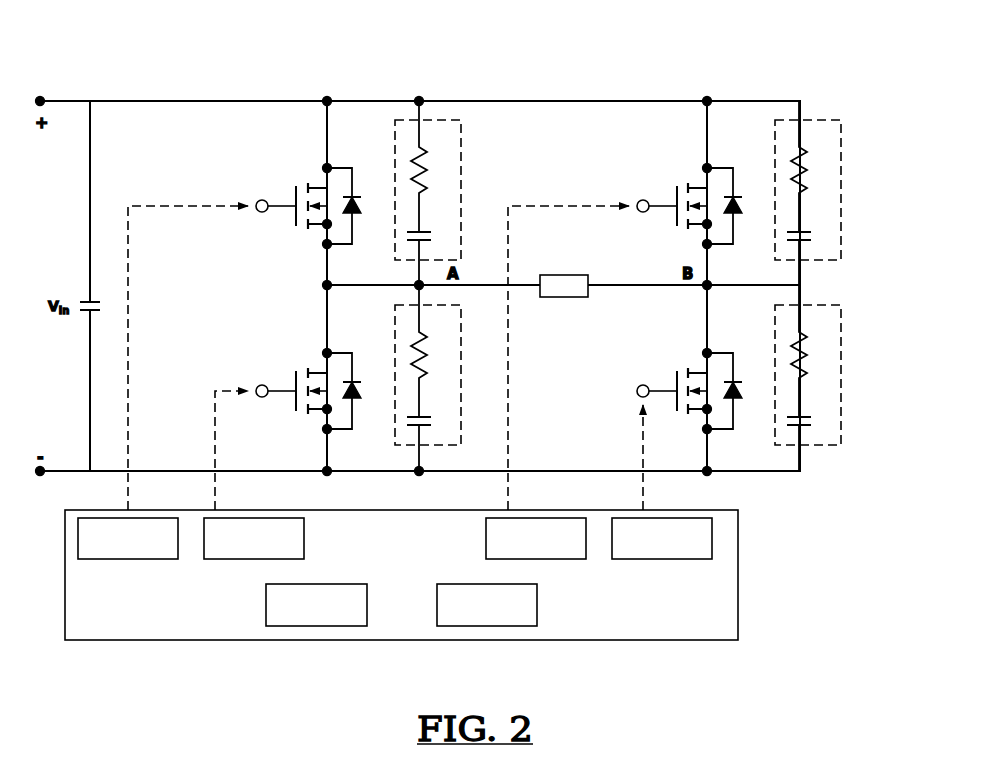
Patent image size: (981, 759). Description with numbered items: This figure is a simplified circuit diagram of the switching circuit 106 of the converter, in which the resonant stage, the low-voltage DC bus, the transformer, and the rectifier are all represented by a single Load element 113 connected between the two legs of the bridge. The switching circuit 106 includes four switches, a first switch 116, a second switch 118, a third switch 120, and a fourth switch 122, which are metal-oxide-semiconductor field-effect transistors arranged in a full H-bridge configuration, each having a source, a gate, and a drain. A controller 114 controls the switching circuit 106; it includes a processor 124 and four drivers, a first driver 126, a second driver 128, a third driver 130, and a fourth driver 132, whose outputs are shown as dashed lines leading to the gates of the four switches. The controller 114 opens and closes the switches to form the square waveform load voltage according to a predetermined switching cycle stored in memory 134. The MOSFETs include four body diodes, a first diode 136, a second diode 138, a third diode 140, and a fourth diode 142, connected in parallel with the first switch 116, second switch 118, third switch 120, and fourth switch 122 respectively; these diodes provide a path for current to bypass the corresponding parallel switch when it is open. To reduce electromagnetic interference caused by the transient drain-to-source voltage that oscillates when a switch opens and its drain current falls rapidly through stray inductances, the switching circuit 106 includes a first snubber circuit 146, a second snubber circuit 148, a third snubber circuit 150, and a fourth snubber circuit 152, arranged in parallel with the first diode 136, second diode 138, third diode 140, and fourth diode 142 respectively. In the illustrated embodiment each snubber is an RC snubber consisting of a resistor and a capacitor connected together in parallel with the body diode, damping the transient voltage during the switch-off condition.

The switching circuit 106 is at (818, 66).
The Load element 113 is at (559, 274).
The controller 114 is at (738, 575).
The first switch 116 is at (281, 184).
The second switch 118 is at (283, 370).
The third switch 120 is at (661, 184).
The fourth switch 122 is at (663, 370).
The processor 124 is at (300, 626).
The first driver 126 is at (128, 559).
The second driver 128 is at (217, 559).
The third driver 130 is at (571, 559).
The fourth driver 132 is at (666, 559).
The memory 134 is at (487, 626).
The first diode 136 is at (360, 190).
The second diode 138 is at (360, 375).
The third diode 140 is at (741, 190).
The fourth diode 142 is at (741, 375).
The first snubber circuit 146 is at (447, 120).
The second snubber circuit 148 is at (461, 372).
The third snubber circuit 150 is at (841, 203).
The fourth snubber circuit 152 is at (841, 360).